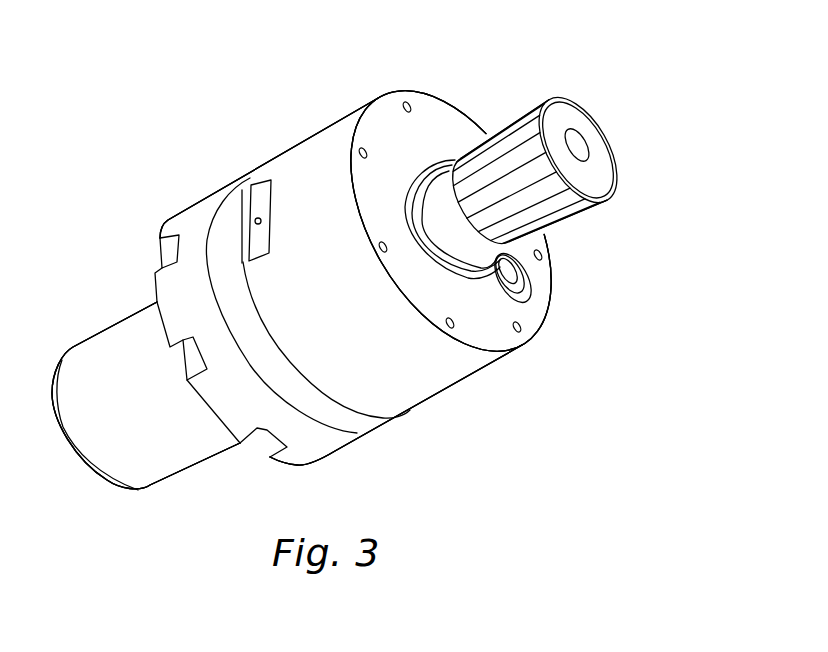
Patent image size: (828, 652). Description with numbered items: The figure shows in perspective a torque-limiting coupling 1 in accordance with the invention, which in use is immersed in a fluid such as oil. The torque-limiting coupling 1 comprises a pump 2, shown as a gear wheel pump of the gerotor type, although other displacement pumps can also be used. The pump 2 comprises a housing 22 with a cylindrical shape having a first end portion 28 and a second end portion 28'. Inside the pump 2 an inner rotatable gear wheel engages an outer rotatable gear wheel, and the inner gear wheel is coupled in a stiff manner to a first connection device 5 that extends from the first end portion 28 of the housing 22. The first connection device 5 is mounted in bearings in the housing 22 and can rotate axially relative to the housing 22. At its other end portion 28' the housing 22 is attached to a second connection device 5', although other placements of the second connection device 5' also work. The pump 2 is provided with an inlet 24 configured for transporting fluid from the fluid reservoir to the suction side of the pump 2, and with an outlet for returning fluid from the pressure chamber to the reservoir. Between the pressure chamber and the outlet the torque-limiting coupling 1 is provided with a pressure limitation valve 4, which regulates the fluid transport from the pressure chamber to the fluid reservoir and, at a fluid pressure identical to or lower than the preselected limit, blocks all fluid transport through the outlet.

The torque-limiting coupling 1 is at (184, 71).
The pump 2 is at (151, 206).
The housing 22 is at (318, 153).
The inlet 24 is at (255, 221).
The first connection device 5 is at (146, 375).
The first end portion 28 is at (223, 388).
The second end portion 28' is at (455, 159).
The second connection device 5' is at (572, 164).
The pressure limitation valve 4 is at (530, 271).